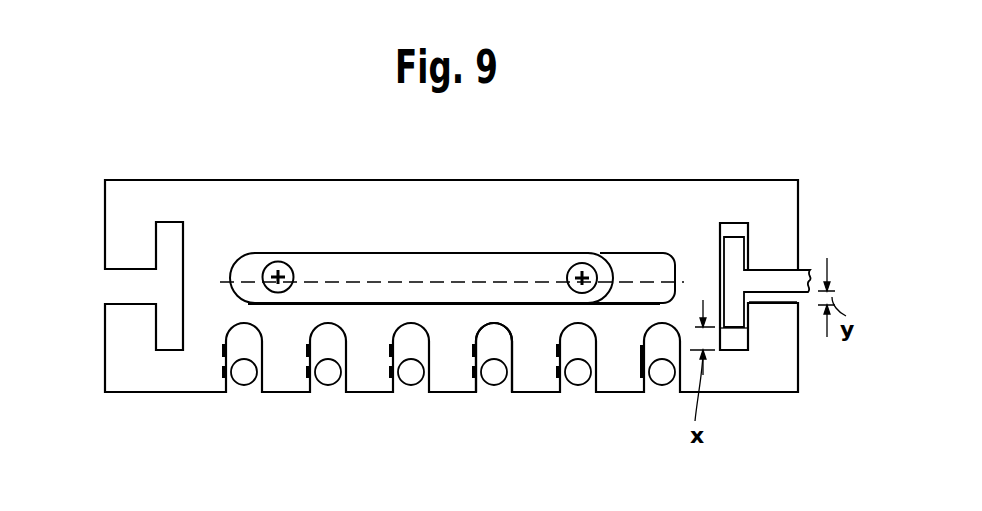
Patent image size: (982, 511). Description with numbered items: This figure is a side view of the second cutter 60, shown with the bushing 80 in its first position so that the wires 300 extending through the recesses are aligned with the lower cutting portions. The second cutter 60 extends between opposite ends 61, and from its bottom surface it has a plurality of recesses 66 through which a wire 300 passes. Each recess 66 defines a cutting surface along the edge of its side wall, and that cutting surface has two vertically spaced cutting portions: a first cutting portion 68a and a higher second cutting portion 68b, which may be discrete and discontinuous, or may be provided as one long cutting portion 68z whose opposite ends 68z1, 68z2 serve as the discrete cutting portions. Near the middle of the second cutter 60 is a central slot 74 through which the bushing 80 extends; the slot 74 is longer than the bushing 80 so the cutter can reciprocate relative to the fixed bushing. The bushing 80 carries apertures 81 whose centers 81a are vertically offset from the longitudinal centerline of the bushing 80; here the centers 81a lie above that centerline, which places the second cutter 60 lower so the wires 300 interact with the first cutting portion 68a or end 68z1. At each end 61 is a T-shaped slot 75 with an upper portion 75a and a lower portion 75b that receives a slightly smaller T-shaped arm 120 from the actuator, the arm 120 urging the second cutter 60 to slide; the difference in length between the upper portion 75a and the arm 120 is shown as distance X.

The second cutter 60 is at (459, 258).
The opposite ends 61 is at (128, 195).
The recess 66 is at (492, 337).
The first cutting portion 68a is at (222, 370).
The second cutting portion 68b is at (222, 348).
The long cutting portion 68z is at (662, 373).
The end of long cutting portion 68z1 is at (642, 368).
The end of long cutting portion 68z2 is at (642, 348).
The central slot 74 is at (645, 262).
The slot 75 is at (169, 240).
The upper portion of slot 75a is at (733, 340).
The lower portion of slot 75b is at (763, 300).
The bushing 80 is at (480, 252).
The apertures 81 is at (288, 264).
The centers of apertures 81a is at (273, 262).
The arm 120 is at (806, 270).
The wire 300 is at (245, 373).